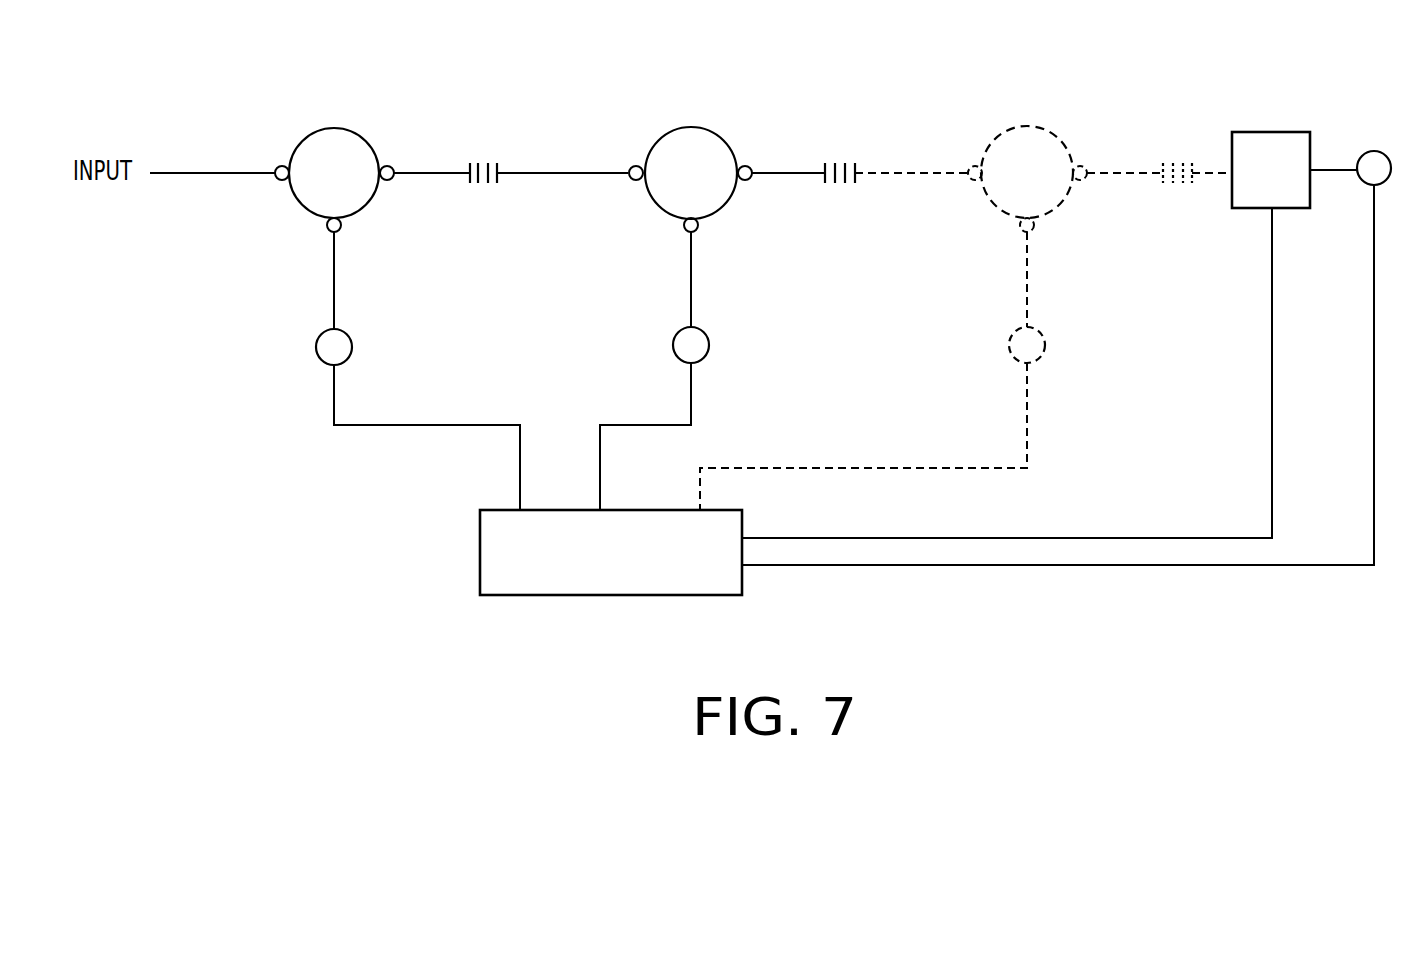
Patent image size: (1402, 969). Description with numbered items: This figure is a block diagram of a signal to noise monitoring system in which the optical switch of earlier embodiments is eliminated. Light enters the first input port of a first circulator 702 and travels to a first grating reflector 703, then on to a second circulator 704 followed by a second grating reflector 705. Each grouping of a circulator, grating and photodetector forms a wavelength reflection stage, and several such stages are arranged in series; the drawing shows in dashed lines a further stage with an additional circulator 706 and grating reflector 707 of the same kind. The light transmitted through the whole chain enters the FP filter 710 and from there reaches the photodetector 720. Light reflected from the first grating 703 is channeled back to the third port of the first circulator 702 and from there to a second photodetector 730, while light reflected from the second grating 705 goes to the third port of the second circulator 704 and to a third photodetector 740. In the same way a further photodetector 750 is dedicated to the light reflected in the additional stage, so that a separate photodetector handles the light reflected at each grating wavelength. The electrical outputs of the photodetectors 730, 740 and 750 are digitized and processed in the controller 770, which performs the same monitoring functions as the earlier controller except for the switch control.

The first circulator 702 is at (339, 161).
The first grating reflector 703 is at (514, 149).
The second circulator 704 is at (708, 161).
The second grating reflector 705 is at (873, 143).
The third circulator (optional) 706 is at (1035, 148).
The third coupler (optional) 707 is at (1153, 148).
The FP filter 710 is at (1253, 136).
The photodetector 720 is at (1341, 118).
The second photodetector 730 is at (330, 348).
The third photodetector 740 is at (688, 348).
The photodetector 750 is at (1025, 348).
The controller 770 is at (493, 548).